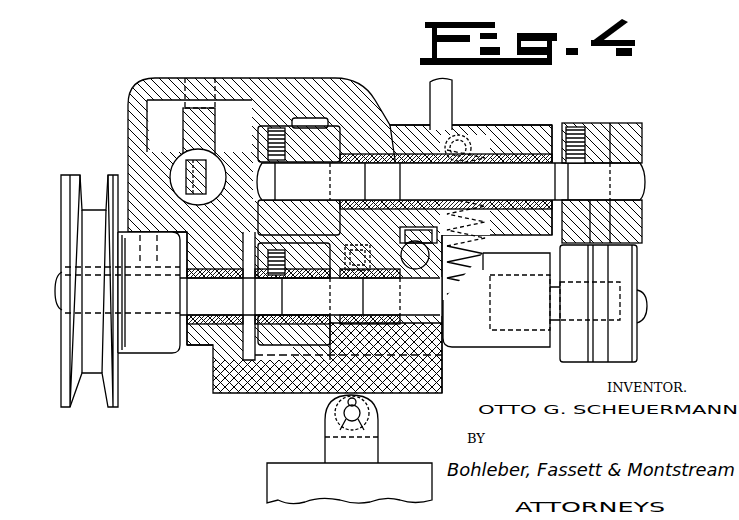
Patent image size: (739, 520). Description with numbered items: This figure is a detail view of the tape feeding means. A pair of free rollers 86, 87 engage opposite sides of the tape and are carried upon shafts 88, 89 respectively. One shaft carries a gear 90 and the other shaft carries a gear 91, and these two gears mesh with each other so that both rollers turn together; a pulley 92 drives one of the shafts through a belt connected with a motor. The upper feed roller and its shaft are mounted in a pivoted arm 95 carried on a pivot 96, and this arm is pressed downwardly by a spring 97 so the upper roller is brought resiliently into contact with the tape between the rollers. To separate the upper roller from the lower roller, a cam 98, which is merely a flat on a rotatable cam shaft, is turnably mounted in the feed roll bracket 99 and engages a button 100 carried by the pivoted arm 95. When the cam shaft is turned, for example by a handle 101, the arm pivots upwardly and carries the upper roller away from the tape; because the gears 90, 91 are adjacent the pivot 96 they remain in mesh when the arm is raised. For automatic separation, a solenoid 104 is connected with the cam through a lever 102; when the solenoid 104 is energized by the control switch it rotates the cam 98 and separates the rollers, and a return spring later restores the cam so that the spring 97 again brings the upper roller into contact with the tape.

The free roller 86 is at (640, 142).
The free roller 87 is at (625, 262).
The shaft 88 is at (632, 187).
The shaft 89 is at (647, 306).
The gear 90 is at (308, 126).
The gear 91 is at (308, 347).
The pulley 92 is at (62, 362).
The pivoted arm 95 is at (343, 92).
The pivot 96 is at (183, 170).
The spring 97 is at (478, 293).
The cam 98 is at (406, 270).
The feed roll bracket 99 is at (396, 394).
The button 100 is at (413, 230).
The handle 101 is at (455, 94).
The lever 102 is at (382, 270).
The solenoid 104 is at (270, 480).